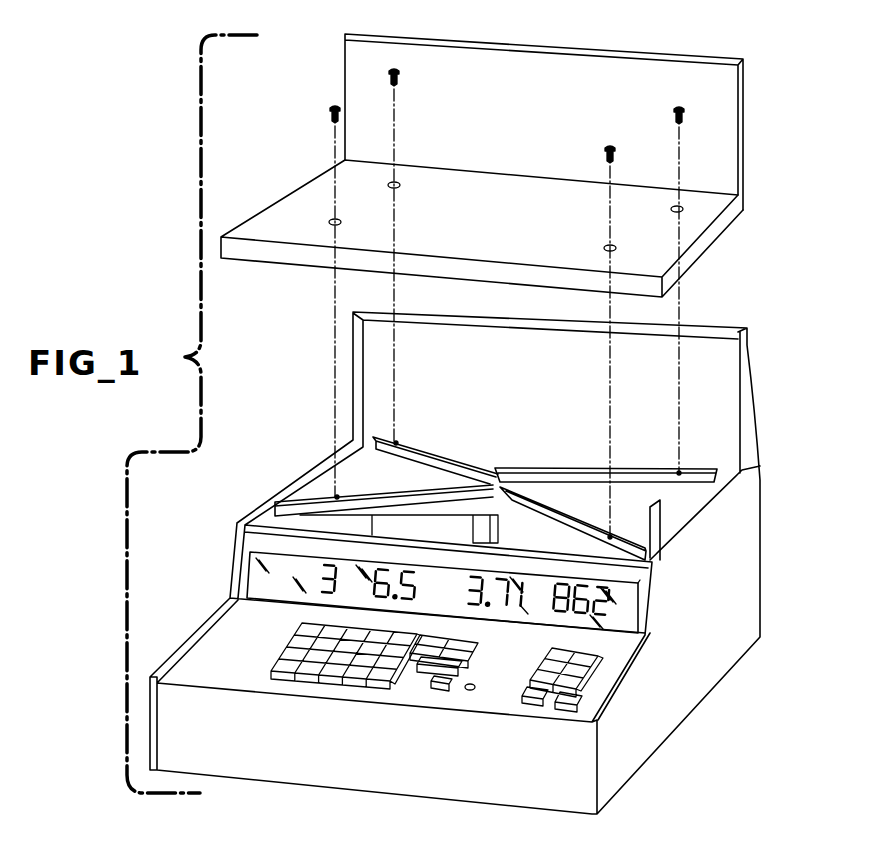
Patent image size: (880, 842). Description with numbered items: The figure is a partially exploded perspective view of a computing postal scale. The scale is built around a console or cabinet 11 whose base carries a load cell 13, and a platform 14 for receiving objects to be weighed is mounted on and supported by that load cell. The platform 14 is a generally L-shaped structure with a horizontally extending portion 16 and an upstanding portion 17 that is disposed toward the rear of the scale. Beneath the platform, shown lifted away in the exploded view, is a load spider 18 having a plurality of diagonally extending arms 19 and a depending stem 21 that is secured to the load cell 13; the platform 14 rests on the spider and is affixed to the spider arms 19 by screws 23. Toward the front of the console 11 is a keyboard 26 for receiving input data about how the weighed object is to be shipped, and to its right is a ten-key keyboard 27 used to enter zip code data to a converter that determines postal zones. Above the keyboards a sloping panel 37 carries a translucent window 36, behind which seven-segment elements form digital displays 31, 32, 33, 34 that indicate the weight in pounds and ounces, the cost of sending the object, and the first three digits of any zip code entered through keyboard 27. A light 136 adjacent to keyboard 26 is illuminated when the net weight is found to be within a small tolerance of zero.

The console or cabinet 11 is at (758, 480).
The load cell 13 is at (663, 522).
The platform 14 is at (503, 272).
The horizontally extending portion 16 is at (298, 197).
The upstanding portion 17 is at (733, 128).
The load spider 18 is at (496, 491).
The diagonally extending arms 19 is at (435, 452).
The depending stem 21 is at (477, 527).
The screws 23 is at (335, 106).
The keyboard 26 is at (287, 652).
The ten-key keyboard 27 is at (607, 663).
The digital display 31 is at (323, 591).
The digital display 32 is at (387, 562).
The digital display 33 is at (503, 575).
The digital display 34 is at (565, 618).
The translucent window 36 is at (258, 573).
The sloping panel 37 is at (640, 579).
The light 136 is at (469, 692).